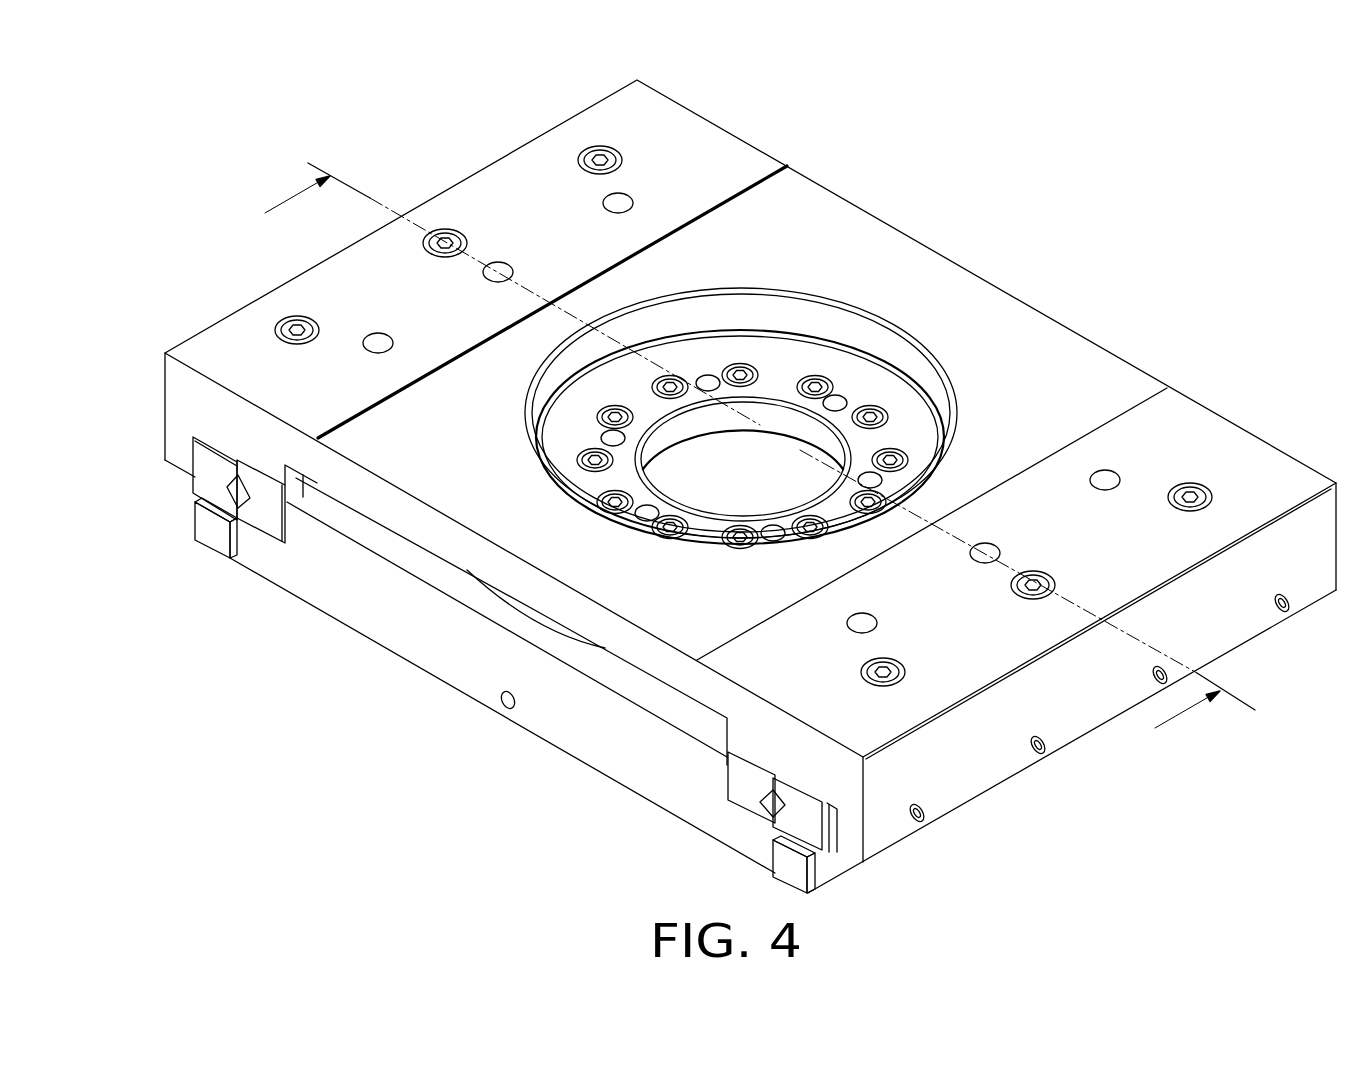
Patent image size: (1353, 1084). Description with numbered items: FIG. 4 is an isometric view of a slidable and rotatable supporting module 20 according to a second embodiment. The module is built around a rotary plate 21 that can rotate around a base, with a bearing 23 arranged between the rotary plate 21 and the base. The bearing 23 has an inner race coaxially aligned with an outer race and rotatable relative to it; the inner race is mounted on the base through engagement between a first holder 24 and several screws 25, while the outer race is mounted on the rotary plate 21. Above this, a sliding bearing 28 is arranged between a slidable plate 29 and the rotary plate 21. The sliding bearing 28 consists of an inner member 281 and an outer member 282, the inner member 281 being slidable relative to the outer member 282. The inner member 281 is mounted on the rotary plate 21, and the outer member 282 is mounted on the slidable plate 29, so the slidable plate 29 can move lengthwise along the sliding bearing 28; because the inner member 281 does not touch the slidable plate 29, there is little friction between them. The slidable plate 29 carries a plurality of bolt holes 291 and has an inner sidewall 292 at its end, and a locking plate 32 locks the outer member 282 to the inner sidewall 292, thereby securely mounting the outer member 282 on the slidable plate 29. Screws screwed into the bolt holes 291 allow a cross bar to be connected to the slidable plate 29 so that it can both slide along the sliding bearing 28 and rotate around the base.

The slidable and rotatable supporting module 20 is at (750, 475).
The rotary plate 21 is at (502, 687).
The bearing 23 is at (847, 407).
The first holder 24 is at (796, 362).
The screws 25 is at (927, 305).
The sliding bearing 28 is at (193, 506).
The inner member 281 is at (201, 534).
The outer member 282 is at (194, 490).
The slidable plate 29 is at (547, 271).
The bolt holes 291 is at (498, 235).
The inner sidewall 292 is at (1001, 607).
The locking plate 32 is at (854, 822).